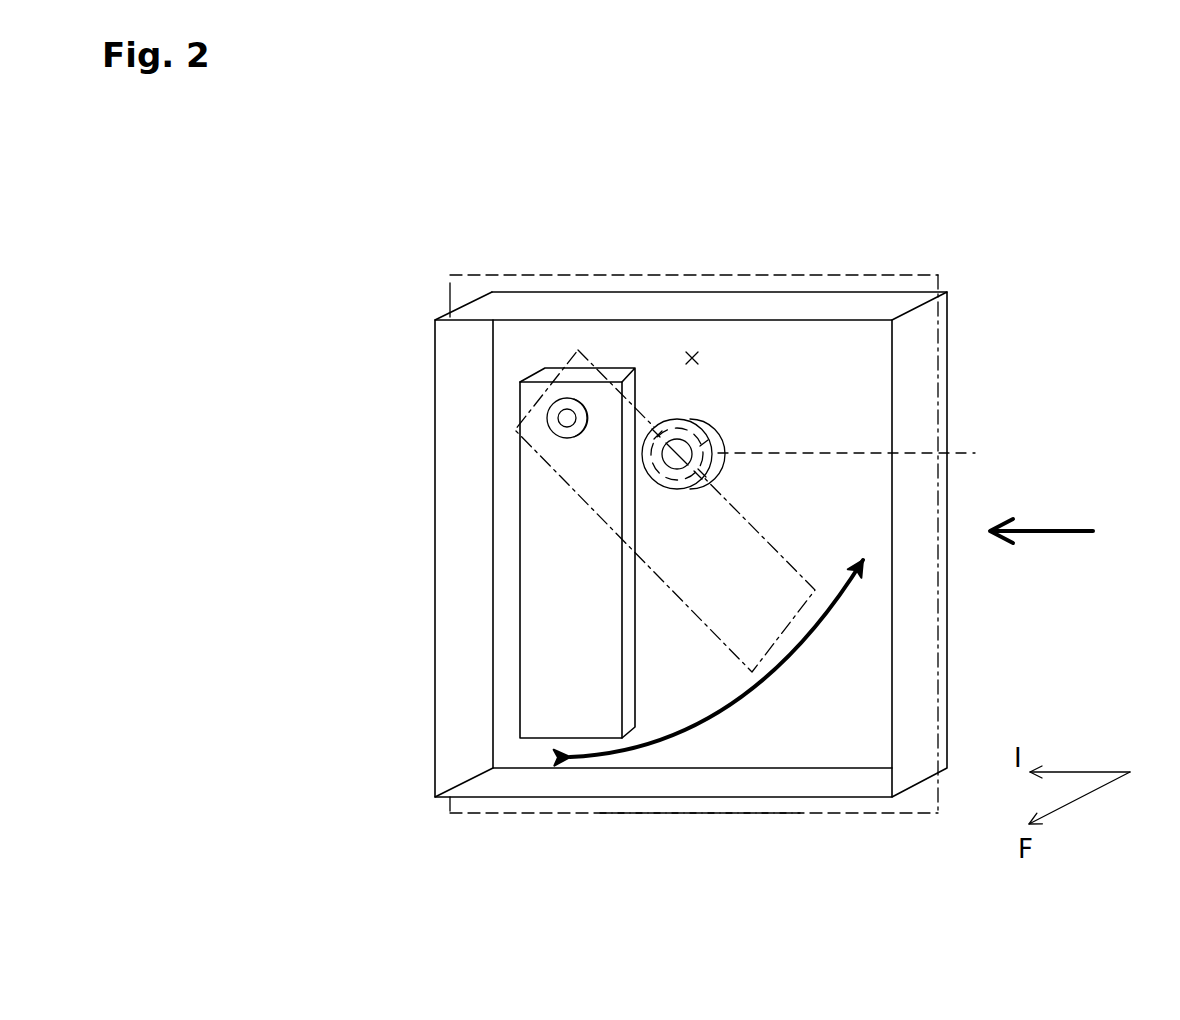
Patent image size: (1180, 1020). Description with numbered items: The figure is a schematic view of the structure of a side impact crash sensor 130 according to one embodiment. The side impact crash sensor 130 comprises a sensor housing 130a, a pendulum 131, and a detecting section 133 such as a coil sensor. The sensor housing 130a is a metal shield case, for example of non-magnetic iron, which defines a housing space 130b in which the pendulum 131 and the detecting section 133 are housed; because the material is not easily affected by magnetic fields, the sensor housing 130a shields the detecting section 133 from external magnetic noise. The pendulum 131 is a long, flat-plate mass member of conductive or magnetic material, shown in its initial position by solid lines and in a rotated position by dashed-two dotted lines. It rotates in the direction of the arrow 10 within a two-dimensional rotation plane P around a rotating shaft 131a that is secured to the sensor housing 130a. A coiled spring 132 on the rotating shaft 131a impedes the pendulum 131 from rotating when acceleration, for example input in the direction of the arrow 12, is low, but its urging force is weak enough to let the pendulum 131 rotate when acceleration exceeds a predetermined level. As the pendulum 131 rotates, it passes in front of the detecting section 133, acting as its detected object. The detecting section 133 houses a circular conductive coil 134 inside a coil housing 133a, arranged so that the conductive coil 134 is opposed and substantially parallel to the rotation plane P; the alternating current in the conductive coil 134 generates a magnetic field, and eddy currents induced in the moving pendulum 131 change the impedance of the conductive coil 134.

The side impact crash sensor 130 is at (625, 218).
The sensor housing 130a is at (765, 305).
The housing space 130b is at (692, 355).
The pendulum 131 is at (673, 598).
The rotating shaft 131a is at (567, 418).
The coiled spring 132 is at (563, 397).
The detecting section 133 is at (725, 435).
The coil housing 133a is at (717, 418).
The conductive coil 134 is at (867, 457).
The arrow indicating rotation direction 10 is at (750, 700).
The arrow indicating acceleration input direction 12 is at (1045, 535).
The rotation plane P is at (695, 815).